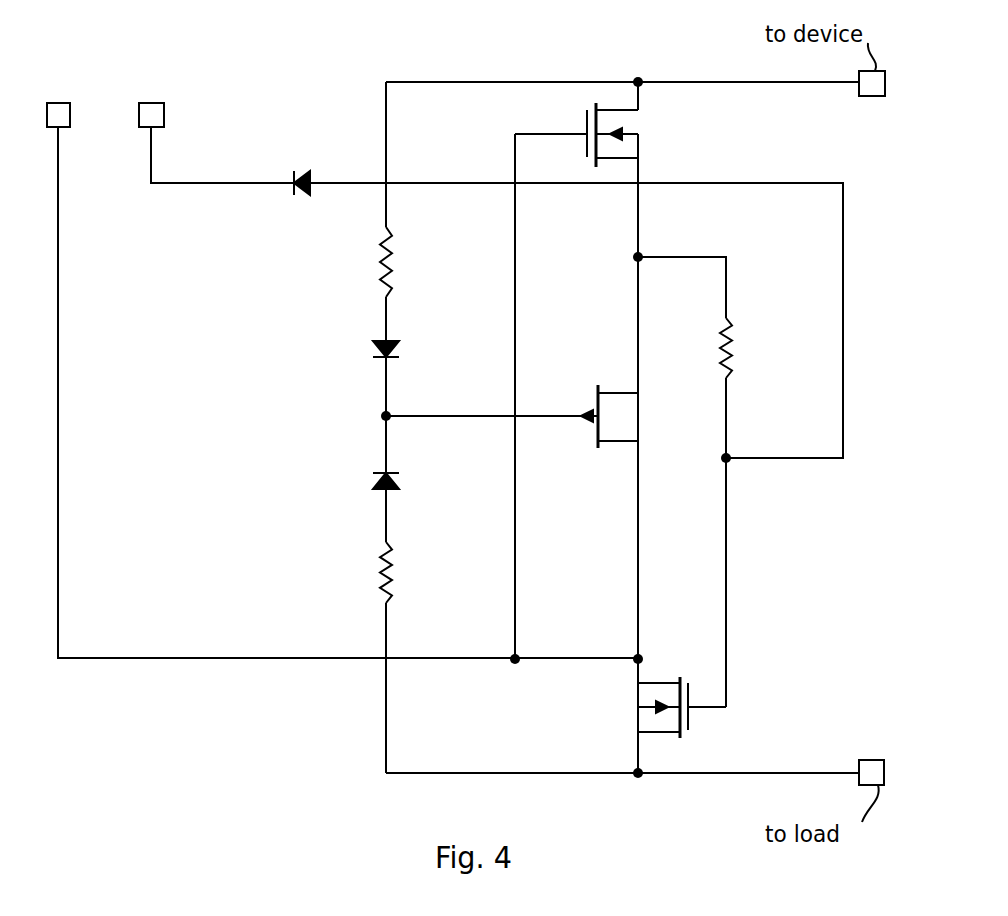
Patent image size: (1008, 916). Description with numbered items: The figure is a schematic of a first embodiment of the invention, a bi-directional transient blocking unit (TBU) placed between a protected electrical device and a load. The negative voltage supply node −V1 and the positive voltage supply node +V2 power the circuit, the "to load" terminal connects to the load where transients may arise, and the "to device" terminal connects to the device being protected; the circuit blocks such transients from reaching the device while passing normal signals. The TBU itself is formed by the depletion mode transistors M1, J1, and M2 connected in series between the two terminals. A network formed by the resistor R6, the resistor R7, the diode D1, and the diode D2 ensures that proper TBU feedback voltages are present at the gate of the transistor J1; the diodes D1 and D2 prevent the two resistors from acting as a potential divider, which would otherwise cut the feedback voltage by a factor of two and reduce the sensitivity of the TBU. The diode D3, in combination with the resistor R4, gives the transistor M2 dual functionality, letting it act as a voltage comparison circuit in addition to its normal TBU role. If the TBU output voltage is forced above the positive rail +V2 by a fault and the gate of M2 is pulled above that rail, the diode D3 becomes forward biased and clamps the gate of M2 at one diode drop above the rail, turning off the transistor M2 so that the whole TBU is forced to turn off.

The negative voltage supply node V1 is at (62, 103).
The positive voltage supply node V2 is at (155, 103).
The diode D3 is at (302, 176).
The resistor R6 is at (388, 253).
The diode D1 is at (373, 349).
The diode D2 is at (377, 483).
The resistor R7 is at (380, 574).
The depletion mode transistor M1 is at (597, 104).
The depletion mode transistor J1 is at (597, 402).
The resistor R4 is at (727, 365).
The depletion mode transistor M2 is at (683, 736).